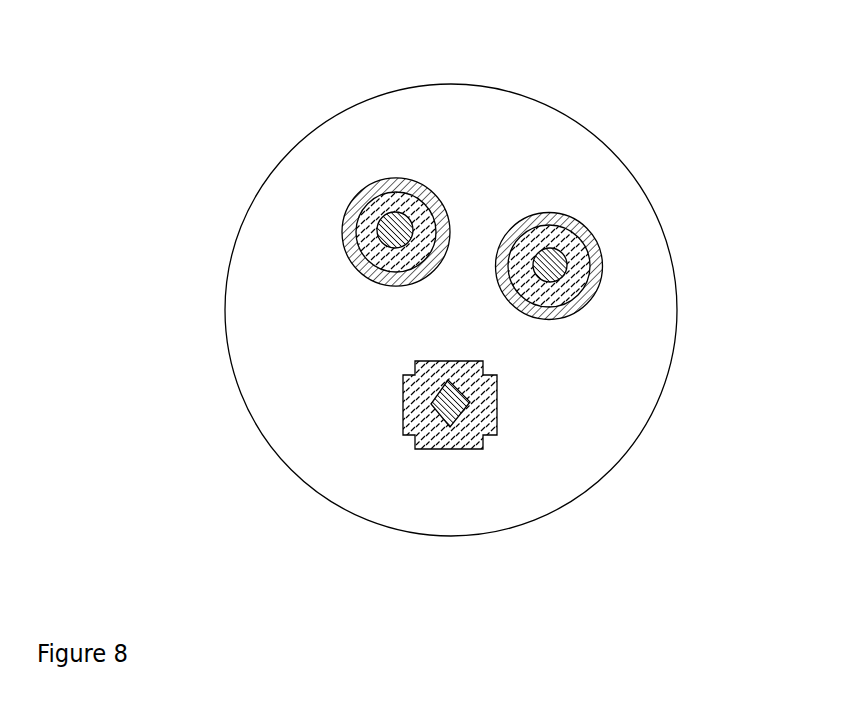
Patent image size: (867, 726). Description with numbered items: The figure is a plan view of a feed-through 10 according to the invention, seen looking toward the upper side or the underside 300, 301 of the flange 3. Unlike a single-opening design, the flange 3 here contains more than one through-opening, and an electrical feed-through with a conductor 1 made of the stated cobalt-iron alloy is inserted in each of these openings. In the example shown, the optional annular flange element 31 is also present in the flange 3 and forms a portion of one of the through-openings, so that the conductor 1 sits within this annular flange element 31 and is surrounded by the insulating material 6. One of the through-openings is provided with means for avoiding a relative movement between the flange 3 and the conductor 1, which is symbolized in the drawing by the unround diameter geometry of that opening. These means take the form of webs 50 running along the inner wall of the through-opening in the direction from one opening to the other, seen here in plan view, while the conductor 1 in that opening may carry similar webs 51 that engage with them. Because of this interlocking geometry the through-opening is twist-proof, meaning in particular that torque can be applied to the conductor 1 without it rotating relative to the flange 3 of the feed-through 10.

The upper side 300 is at (621, 80).
The underside 301 is at (507, 127).
The flange 3 is at (612, 187).
The annular flange element 31 is at (624, 388).
The insulation 6 is at (582, 275).
The conductor 1 is at (563, 277).
The feed-through 10 is at (652, 482).
The webs 50 is at (407, 422).
The webs 51 is at (435, 402).